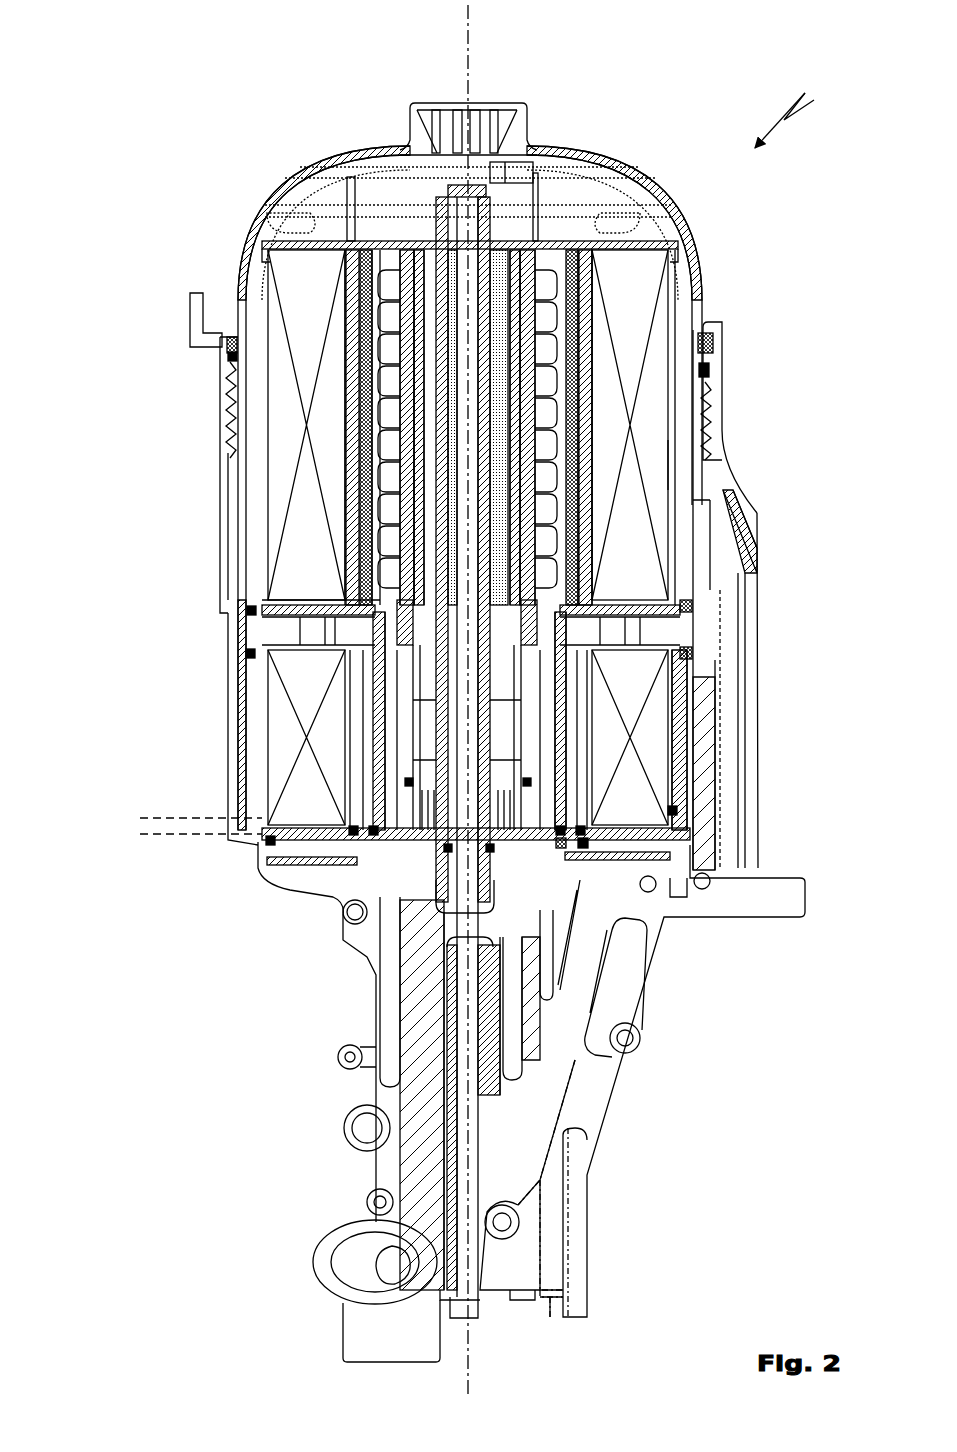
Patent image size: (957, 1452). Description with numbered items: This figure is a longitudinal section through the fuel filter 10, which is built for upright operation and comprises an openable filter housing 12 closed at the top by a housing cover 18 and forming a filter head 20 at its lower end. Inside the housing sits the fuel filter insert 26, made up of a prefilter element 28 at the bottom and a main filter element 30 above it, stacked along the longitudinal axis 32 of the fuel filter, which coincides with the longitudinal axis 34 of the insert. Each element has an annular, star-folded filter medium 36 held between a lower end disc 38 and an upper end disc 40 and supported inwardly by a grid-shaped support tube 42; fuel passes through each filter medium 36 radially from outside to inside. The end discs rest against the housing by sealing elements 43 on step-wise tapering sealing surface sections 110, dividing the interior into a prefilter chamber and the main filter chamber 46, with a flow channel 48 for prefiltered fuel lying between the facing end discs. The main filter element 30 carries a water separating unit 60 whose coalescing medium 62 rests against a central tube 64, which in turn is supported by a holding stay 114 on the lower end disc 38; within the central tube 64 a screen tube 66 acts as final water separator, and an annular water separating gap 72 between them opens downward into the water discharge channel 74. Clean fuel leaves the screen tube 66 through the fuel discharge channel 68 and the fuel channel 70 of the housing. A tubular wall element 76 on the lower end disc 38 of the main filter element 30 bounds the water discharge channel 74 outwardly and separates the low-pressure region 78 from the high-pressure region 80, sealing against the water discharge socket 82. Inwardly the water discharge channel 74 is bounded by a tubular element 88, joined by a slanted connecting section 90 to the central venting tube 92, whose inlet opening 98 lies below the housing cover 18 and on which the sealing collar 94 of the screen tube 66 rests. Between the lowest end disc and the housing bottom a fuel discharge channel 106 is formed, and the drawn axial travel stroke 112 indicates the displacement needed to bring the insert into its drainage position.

The fuel filter 10 is at (793, 104).
The filter housing 12 is at (180, 503).
The housing cover 18 is at (245, 235).
The filter head 20 is at (230, 577).
The fuel filter insert 26 is at (560, 222).
The prefilter element 28 is at (681, 718).
The main filter element 30 is at (683, 418).
The longitudinal axis of the fuel filter 32 is at (470, 1340).
The longitudinal axis of the fuel filter insert 34 is at (478, 33).
The filter medium 36 is at (468, 537).
The lower end disc 38 is at (668, 622).
The upper end disc 40 is at (608, 238).
The support tube 42 is at (585, 290).
The sealing element 43 is at (706, 372).
The main filter chamber 46 is at (680, 308).
The flow channel 48 is at (308, 626).
The water separating unit 60 is at (353, 420).
The coalescing medium 62 is at (583, 258).
The central tube 64 is at (392, 346).
The screen tube 66 is at (485, 410).
The fuel discharge channel 68 is at (560, 768).
The fuel channel 70 is at (510, 984).
The water separating gap 72 is at (390, 315).
The water discharge channel 74 is at (405, 735).
The wall element 76 is at (668, 818).
The low-pressure region 78 is at (675, 736).
The high-pressure region 80 is at (652, 465).
The water discharge socket 82 is at (584, 842).
The tubular element 88 is at (538, 744).
The connecting section 90 is at (432, 632).
The venting tube 92 is at (445, 200).
The sealing collar 94 is at (392, 731).
The inlet opening 98 is at (462, 182).
The fuel discharge channel 106 is at (590, 836).
The sealing surface sections 110 is at (705, 352).
The axial travel stroke 112 is at (134, 818).
The holding stay 114 is at (598, 552).